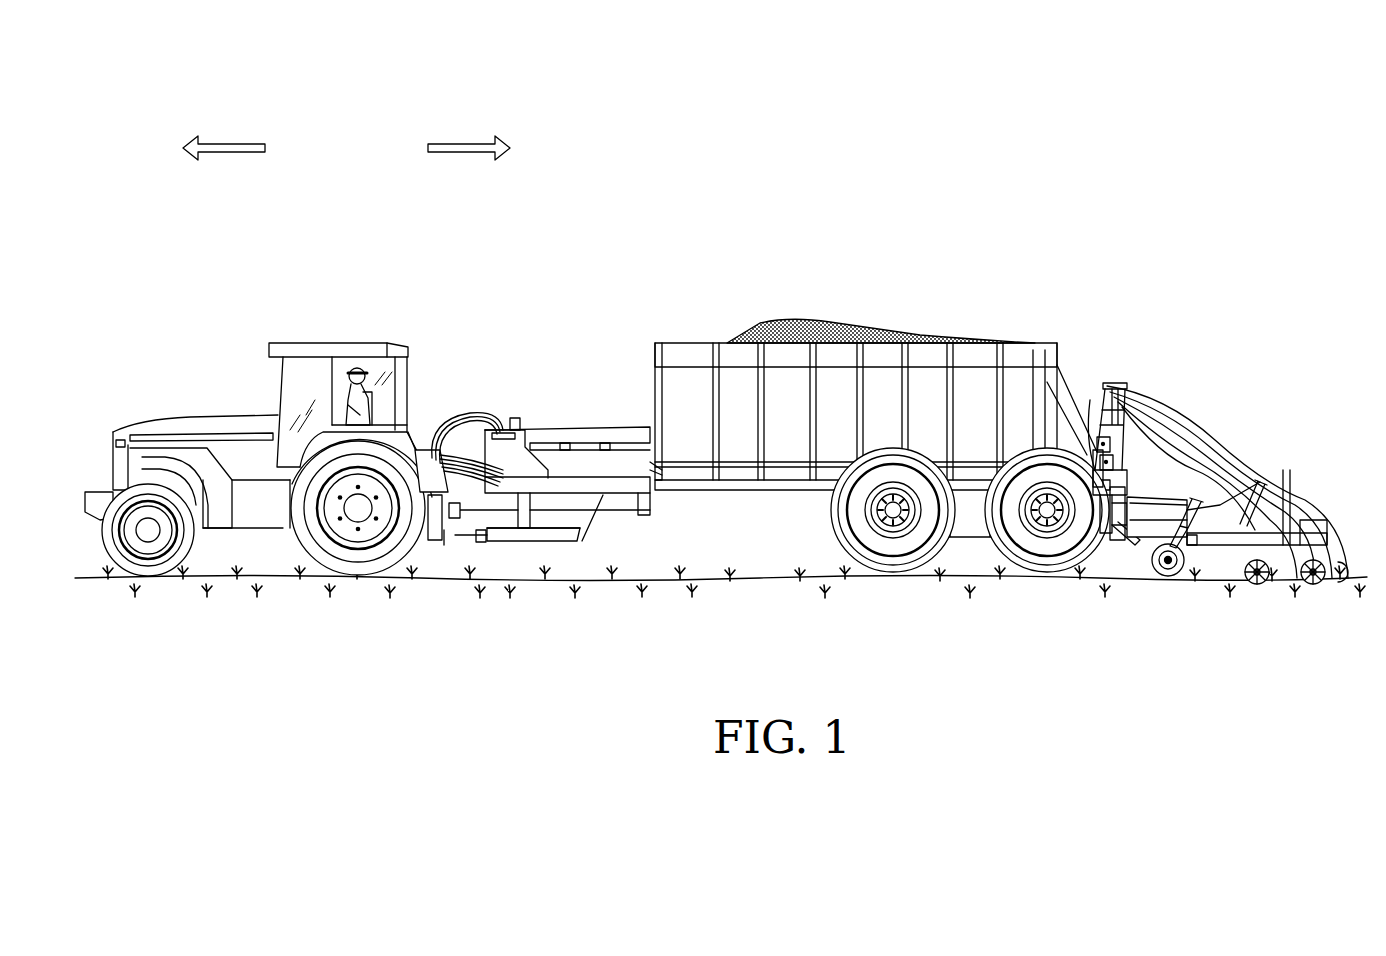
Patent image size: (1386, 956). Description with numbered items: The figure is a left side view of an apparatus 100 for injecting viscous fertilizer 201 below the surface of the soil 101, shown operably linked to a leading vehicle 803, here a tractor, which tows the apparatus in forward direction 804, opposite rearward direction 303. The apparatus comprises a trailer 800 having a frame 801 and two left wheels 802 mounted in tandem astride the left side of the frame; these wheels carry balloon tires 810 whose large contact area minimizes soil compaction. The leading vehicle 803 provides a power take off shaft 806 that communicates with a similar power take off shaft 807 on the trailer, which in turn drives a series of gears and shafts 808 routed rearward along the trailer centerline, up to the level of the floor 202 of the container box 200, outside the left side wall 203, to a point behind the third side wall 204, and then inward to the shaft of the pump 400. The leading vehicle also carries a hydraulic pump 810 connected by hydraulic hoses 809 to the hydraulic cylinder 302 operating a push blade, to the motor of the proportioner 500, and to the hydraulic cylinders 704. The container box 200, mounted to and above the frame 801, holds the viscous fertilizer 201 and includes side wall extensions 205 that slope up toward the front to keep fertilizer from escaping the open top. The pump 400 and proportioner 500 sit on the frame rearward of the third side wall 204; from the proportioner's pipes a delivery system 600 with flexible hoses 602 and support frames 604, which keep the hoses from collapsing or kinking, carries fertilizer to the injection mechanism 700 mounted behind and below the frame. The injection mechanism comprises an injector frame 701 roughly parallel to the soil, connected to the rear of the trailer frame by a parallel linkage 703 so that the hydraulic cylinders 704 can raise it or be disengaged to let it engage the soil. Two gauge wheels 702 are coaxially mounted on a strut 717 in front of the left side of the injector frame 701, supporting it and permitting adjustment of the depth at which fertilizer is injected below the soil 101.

The apparatus 100 is at (830, 125).
The soil 101 is at (780, 570).
The container box 200 is at (865, 355).
The viscous fertilizer 201 is at (865, 374).
The floor 202 is at (740, 470).
The left side wall 203 is at (790, 382).
The third side wall 204 is at (1065, 368).
The side wall extensions 205 is at (1003, 358).
The hydraulic cylinder 302 is at (618, 440).
The rearward direction 303 is at (444, 149).
The pump 400 is at (1068, 400).
The proportioner 500 is at (1125, 382).
The delivery system 600 is at (1227, 476).
The flexible hoses 602 is at (1222, 465).
The support frames 604 is at (1250, 482).
The injection mechanism 700 is at (1208, 565).
The injector frame 701 is at (1225, 547).
The gauge wheels 702 is at (1168, 578).
The parallel linkage 703 is at (1148, 538).
The hydraulic cylinders 704 is at (1118, 542).
The strut 717 is at (1190, 552).
The trailer 800 is at (882, 543).
The frame 801 is at (784, 492).
The left wheels 802 is at (893, 519).
The leading vehicle 803 is at (297, 335).
The forward direction 804 is at (250, 149).
The power take off shaft 806 is at (460, 532).
The power take off shaft 807 is at (548, 512).
The gears and shafts 808 is at (690, 455).
The hydraulic hoses 809 is at (462, 430).
The hydraulic pump 810 is at (428, 450).